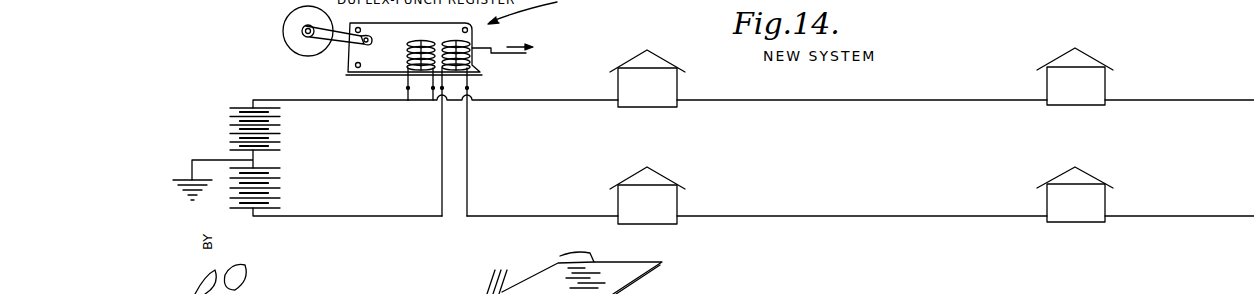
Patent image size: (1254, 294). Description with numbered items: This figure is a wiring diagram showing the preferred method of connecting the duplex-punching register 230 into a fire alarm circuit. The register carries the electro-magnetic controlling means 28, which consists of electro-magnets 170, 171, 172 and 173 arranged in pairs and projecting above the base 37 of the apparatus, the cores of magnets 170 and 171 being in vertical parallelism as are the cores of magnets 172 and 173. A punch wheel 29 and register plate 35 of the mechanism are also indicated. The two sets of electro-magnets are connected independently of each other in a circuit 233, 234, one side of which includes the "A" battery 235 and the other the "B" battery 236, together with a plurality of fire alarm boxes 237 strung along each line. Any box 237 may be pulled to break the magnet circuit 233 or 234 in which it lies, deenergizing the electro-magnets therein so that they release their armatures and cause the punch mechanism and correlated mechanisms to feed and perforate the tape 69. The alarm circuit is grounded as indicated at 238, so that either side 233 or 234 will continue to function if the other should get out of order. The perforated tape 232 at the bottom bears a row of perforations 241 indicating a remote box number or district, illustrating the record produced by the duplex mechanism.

The electro-magnetic controlling means 28 is at (462, 33).
The punch wheel 29 is at (280, 23).
The register plate 35 is at (403, 45).
The base 37 is at (348, 74).
The tape 69 is at (632, 263).
The electro-magnet 170 is at (408, 58).
The electro-magnet 171 is at (434, 43).
The electro-magnet 172 is at (434, 67).
The electro-magnet 173 is at (477, 65).
The register 230 is at (432, 22).
The punched record tape 232 is at (545, 277).
The circuit 233 is at (342, 102).
The circuit 234 is at (398, 215).
The "A" battery 235 is at (240, 108).
The "B" battery 236 is at (247, 211).
The fire alarm box 237 is at (678, 87).
The ground 238 is at (183, 160).
The row of perforations 241 is at (976, 284).